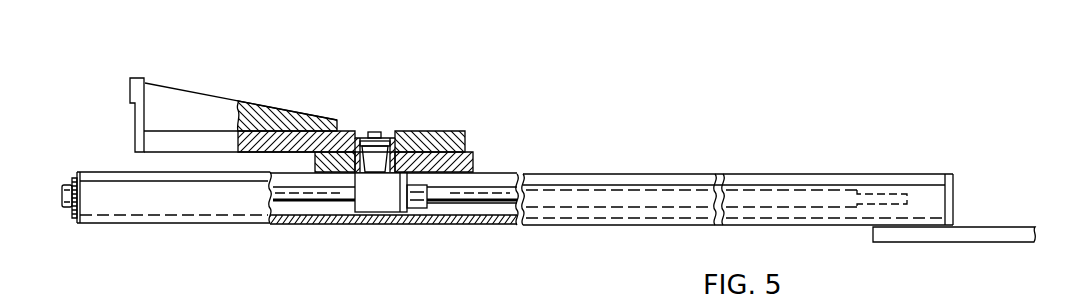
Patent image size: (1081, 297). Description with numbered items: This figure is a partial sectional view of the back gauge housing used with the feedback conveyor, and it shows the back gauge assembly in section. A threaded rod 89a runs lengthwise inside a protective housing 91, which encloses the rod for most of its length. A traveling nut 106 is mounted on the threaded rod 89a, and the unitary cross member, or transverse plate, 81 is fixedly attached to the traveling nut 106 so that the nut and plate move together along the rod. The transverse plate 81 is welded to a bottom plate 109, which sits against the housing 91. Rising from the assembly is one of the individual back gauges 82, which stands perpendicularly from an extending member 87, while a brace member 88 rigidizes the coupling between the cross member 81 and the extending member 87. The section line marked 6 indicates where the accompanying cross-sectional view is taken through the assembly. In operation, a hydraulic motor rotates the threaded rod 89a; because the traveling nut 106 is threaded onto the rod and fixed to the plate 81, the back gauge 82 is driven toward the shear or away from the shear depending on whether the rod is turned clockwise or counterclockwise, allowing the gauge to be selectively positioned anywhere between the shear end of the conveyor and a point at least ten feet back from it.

The back gauge 82 is at (138, 78).
The brace member 88 is at (226, 98).
The extending member 87 is at (177, 140).
The unitary cross member 81 is at (451, 141).
The bottom plate 109 is at (473, 160).
The section line 6- 6 is at (390, 93).
The housing 91 is at (637, 174).
The threaded rod member 89a is at (898, 192).
The traveling nut 106 is at (370, 200).